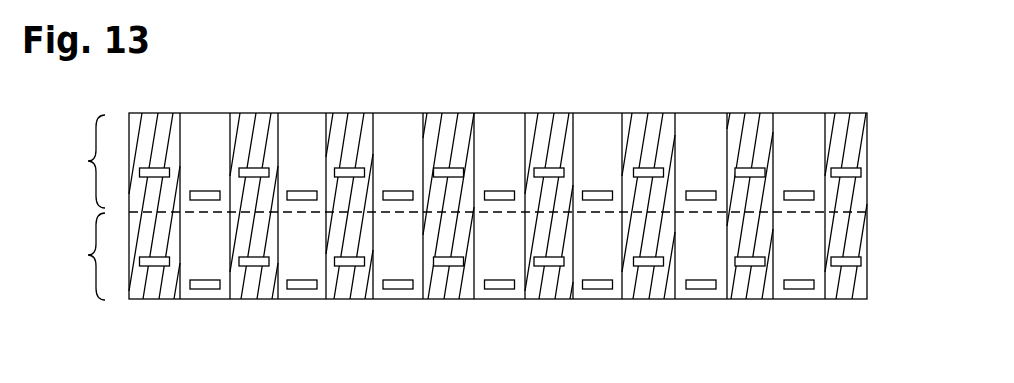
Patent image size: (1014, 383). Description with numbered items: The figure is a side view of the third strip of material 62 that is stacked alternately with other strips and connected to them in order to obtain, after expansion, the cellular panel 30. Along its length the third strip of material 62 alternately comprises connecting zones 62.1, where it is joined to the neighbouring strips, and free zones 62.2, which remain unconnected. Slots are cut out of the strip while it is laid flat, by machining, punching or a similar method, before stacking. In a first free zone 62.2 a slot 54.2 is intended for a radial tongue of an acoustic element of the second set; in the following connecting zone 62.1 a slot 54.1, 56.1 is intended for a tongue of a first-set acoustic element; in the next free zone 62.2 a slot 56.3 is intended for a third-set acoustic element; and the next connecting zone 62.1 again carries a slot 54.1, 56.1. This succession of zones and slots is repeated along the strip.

The third strip of material 62 is at (108, 136).
The cellular panel 30 is at (78, 207).
The connecting zone 62.1 is at (202, 300).
The free zone 62.2 is at (129, 283).
The slot 56.3 is at (155, 168).
The slot 54.2 is at (247, 168).
The slot 56.1 is at (200, 191).
The slot 54.1 is at (297, 191).